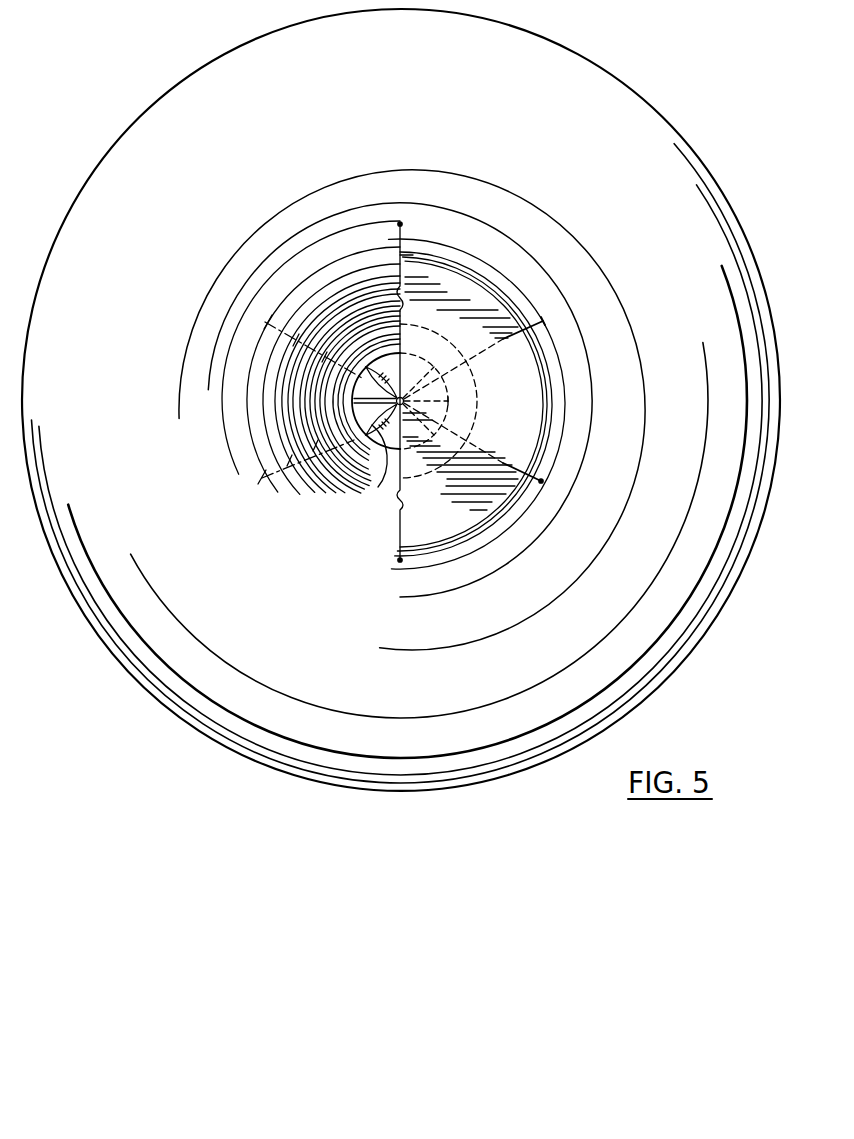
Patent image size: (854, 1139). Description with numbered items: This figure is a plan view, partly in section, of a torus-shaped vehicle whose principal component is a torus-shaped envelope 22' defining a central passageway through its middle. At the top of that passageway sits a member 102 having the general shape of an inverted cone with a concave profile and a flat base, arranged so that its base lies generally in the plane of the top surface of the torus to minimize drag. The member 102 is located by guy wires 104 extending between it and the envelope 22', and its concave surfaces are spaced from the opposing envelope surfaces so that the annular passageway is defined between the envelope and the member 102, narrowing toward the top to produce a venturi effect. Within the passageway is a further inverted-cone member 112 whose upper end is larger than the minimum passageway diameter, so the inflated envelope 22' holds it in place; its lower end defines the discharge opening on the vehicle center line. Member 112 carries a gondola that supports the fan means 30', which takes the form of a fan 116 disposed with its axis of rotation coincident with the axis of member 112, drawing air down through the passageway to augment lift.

The torus-shaped envelope 22' is at (401, 398).
The member 102 is at (473, 283).
The guy wires 104 is at (402, 223).
The member 112 is at (332, 403).
The fan means 30' is at (399, 405).
The fan 116 is at (376, 480).